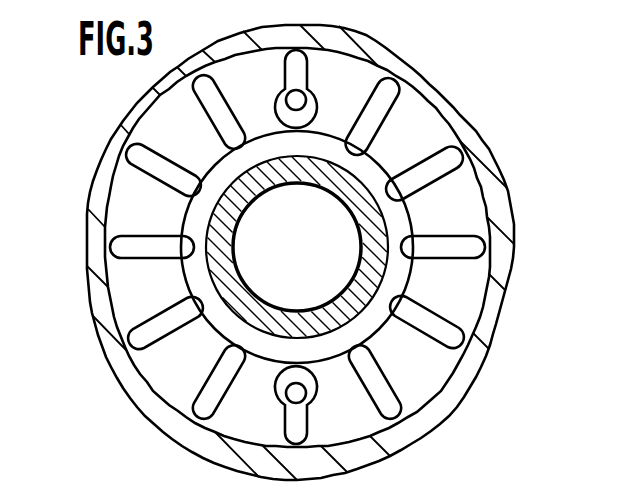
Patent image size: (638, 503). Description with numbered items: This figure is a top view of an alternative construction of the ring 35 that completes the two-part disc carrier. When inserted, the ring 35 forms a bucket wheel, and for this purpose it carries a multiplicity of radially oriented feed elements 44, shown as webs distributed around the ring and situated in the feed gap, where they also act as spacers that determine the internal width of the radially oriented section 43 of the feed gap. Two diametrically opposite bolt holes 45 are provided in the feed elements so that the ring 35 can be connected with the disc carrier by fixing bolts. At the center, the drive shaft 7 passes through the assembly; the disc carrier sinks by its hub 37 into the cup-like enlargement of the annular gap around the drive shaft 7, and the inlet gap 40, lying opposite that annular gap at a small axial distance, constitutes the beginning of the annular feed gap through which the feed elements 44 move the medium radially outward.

The ring 35 is at (417, 122).
The radially oriented section 43 is at (201, 114).
The feed elements 44 is at (483, 237).
The bolt holes 45 is at (307, 98).
The inlet gap 40 is at (203, 217).
The hub 37 is at (238, 297).
The drive shaft 7 is at (260, 240).